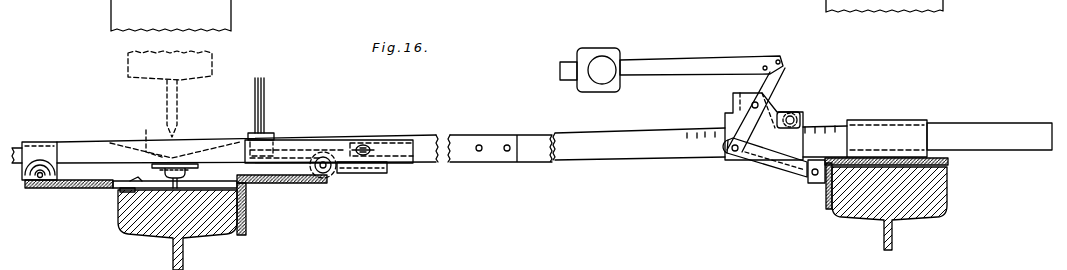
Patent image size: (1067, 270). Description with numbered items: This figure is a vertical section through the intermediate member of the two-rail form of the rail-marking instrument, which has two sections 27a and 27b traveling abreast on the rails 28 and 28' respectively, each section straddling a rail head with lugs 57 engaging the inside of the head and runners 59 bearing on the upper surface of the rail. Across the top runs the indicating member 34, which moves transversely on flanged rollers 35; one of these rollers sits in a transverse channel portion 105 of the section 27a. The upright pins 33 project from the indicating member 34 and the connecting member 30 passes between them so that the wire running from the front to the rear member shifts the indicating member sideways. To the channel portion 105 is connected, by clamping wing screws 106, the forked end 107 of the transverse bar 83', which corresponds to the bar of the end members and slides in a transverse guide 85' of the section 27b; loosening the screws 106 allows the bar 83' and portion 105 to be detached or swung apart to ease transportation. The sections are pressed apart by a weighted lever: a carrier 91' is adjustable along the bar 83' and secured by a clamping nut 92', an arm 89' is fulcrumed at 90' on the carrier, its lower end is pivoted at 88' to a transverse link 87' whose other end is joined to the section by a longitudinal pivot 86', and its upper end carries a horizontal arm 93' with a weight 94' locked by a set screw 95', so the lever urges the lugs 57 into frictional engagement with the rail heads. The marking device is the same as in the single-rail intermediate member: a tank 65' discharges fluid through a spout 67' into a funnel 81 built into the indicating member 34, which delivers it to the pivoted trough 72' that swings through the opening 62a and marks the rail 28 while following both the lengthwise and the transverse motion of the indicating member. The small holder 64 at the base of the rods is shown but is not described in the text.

The tank 65' is at (185, 65).
The spout 67' is at (192, 108).
The indicating member 34 is at (85, 145).
The upright pins 33 is at (262, 80).
The connecting member 30 is at (265, 98).
The rod holder block 64 is at (274, 136).
The funnel 81 is at (145, 138).
The opening 62a is at (127, 182).
The trough 72' is at (189, 174).
The section 27a is at (80, 190).
The runners 59 is at (128, 190).
The rail 28 is at (177, 230).
The lugs 57 is at (246, 208).
The flanged rollers 35 is at (330, 175).
The transverse channel portion 105 is at (350, 173).
The clamping wing screws 106 is at (372, 148).
The forked end 107 is at (443, 162).
The transverse bar 83' is at (751, 155).
The transverse guide 85' is at (887, 124).
The section 27b is at (948, 162).
The rail 28' is at (907, 208).
The weight 94' is at (590, 55).
The set screw 95' is at (619, 51).
The horizontal arm 93' is at (701, 55).
The carrier 91' is at (745, 110).
The arm 89' is at (751, 126).
The fulcrum 90' is at (782, 92).
The clamping nut 92' is at (808, 106).
The pivot 88' is at (725, 163).
The transverse link 87' is at (767, 167).
The longitudinal pivot 86' is at (807, 184).